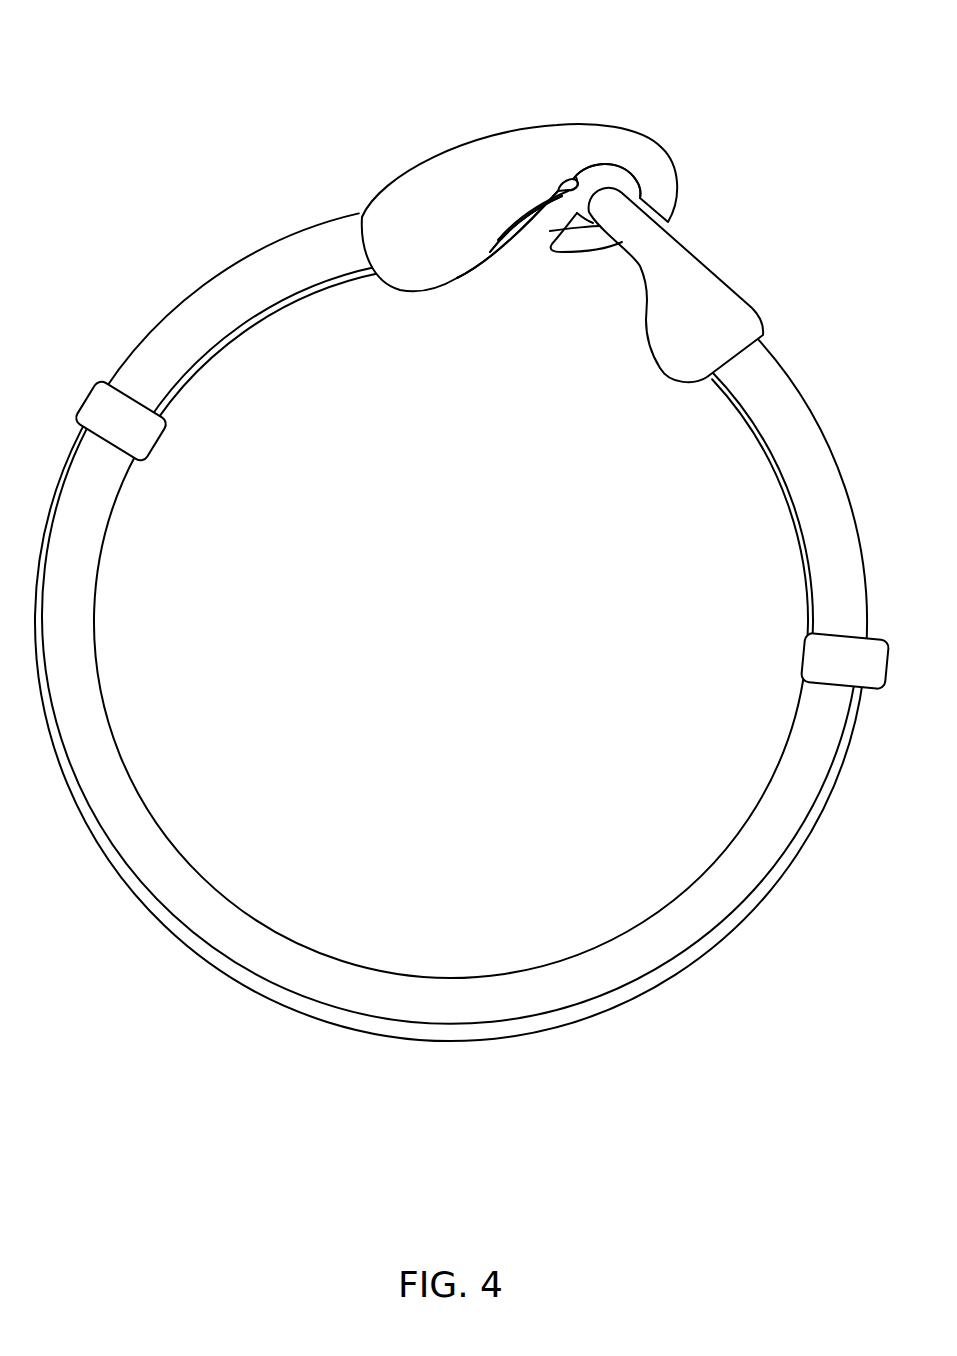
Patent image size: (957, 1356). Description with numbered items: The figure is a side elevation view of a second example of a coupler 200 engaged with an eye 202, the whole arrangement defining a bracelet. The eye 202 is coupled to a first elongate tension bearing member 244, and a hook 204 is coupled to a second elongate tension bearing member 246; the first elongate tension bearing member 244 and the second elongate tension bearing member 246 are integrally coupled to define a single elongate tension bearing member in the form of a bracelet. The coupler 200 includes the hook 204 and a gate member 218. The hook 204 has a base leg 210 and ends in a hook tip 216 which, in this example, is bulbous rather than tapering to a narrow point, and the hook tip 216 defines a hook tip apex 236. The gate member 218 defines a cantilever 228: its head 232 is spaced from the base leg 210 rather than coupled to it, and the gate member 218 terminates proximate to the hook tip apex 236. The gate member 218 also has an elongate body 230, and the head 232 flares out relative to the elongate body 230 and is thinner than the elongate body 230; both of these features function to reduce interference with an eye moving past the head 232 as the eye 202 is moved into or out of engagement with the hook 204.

The coupler 200 is at (462, 523).
The eye 202 is at (658, 285).
The hook 204 is at (533, 213).
The base leg 210 is at (564, 227).
The hook tip 216 is at (559, 244).
The gate member 218 is at (498, 252).
The cantilever 228 is at (493, 266).
The elongate body 230 is at (532, 233).
The head 232 is at (566, 180).
The hook tip apex 236 is at (578, 216).
The first elongate tension bearing member 244 is at (300, 240).
The second elongate tension bearing member 246 is at (765, 360).